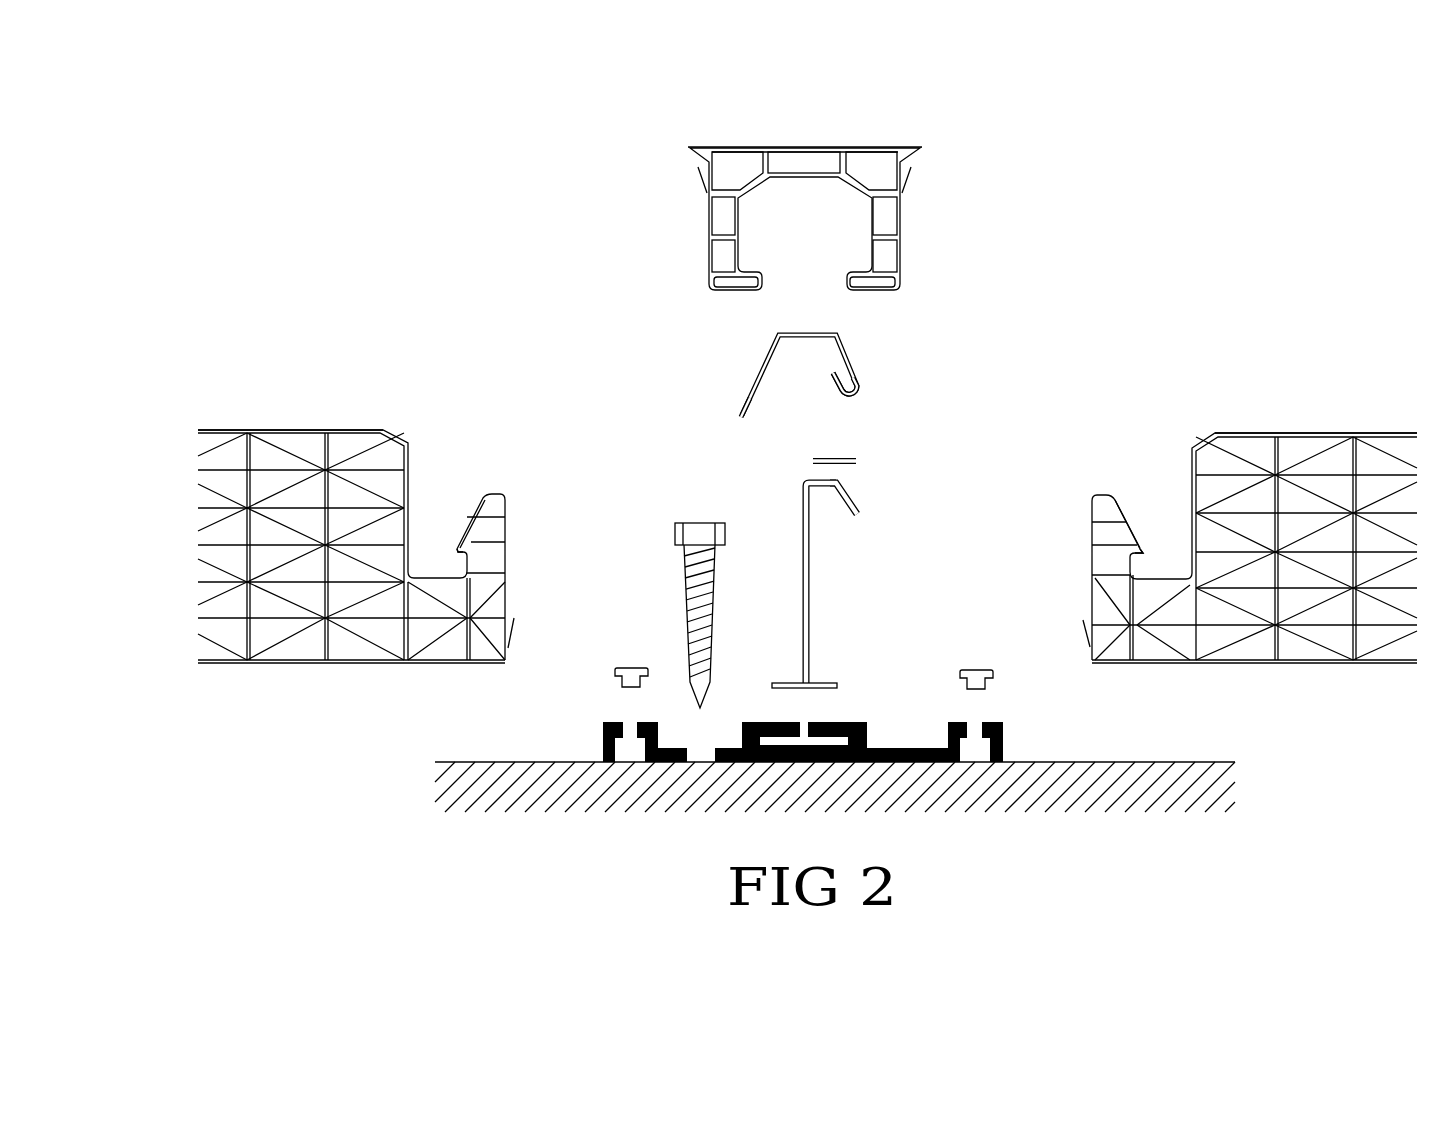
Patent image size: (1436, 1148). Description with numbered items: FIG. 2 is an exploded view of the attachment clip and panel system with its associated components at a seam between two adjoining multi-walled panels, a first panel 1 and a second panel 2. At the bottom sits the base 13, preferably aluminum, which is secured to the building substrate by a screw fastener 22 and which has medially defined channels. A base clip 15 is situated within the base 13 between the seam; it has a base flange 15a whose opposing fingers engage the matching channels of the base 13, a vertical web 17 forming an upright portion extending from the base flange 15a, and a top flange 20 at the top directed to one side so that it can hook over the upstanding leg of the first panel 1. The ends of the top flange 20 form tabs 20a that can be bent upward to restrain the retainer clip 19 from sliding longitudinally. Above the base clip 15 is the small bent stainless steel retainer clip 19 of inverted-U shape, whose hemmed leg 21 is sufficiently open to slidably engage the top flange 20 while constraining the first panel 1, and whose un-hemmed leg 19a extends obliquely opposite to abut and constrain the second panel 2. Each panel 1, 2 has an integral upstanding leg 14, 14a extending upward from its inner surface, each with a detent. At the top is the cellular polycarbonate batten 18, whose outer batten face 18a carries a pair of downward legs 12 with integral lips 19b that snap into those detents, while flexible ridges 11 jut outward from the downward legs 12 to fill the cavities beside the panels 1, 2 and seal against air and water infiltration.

The first panel 1 is at (1227, 544).
The second panel 2 is at (384, 545).
The flexible ridges 11 is at (907, 168).
The downward leg 12 is at (887, 262).
The base 13 is at (1003, 732).
The upstanding leg 14 is at (1107, 533).
The upstanding leg 14a is at (493, 532).
The base clip 15 is at (842, 572).
The base flange 15a is at (785, 688).
The vertical web 17 is at (811, 625).
The batten 18 is at (802, 214).
The outer batten face 18a is at (808, 147).
The retainer clip 19 is at (797, 371).
The un-hemmed leg 19a is at (740, 405).
The integral lip 19b is at (847, 282).
The top flange 20 is at (856, 505).
The tabs 20a is at (857, 458).
The hemmed leg 21 is at (868, 385).
The screw fastener 22 is at (676, 522).